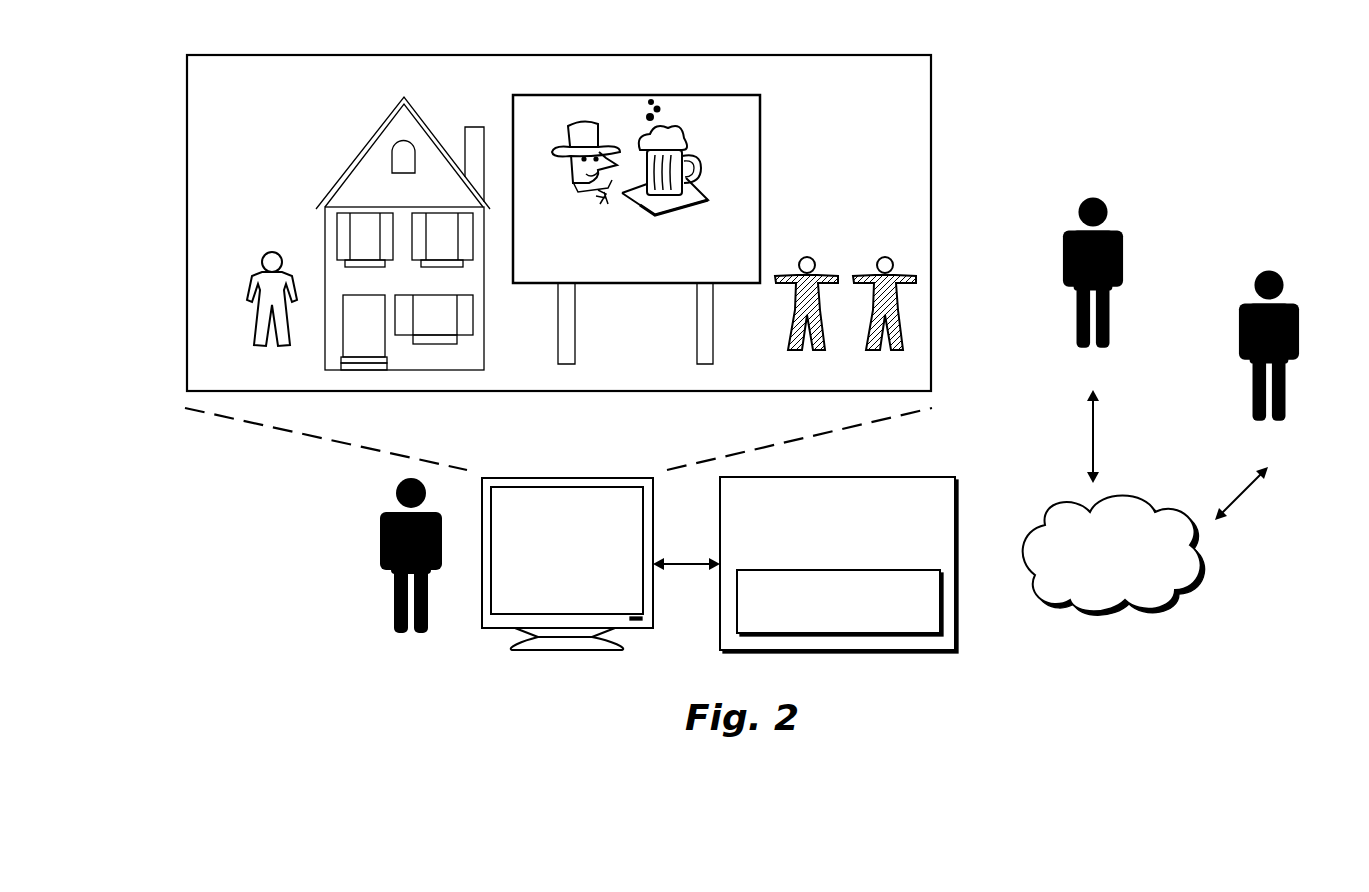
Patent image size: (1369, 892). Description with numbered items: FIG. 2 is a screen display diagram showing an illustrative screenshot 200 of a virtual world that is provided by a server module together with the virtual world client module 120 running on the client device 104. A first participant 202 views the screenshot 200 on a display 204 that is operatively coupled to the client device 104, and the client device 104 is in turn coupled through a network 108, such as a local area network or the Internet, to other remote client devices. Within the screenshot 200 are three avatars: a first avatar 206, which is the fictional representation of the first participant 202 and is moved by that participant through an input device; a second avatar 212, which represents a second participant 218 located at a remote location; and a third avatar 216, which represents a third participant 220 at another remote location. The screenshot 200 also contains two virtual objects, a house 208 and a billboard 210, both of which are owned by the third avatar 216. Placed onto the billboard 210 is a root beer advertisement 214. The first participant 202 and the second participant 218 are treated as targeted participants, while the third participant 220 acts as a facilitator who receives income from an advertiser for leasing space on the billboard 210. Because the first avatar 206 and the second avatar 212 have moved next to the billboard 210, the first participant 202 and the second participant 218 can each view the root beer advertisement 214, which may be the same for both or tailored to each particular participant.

The screenshot 200 is at (558, 55).
The first participant 202 is at (411, 571).
The display 204 is at (567, 564).
The client device 104 is at (839, 565).
The virtual world client module 120 is at (840, 603).
The network 108 is at (1114, 556).
The first avatar 206 is at (806, 316).
The house 208 is at (365, 143).
The billboard 210 is at (635, 95).
The second avatar 212 is at (884, 316).
The root beer advertisement 214 is at (745, 149).
The third avatar 216 is at (272, 311).
The second participant 218 is at (1093, 286).
The third participant 220 is at (1269, 360).